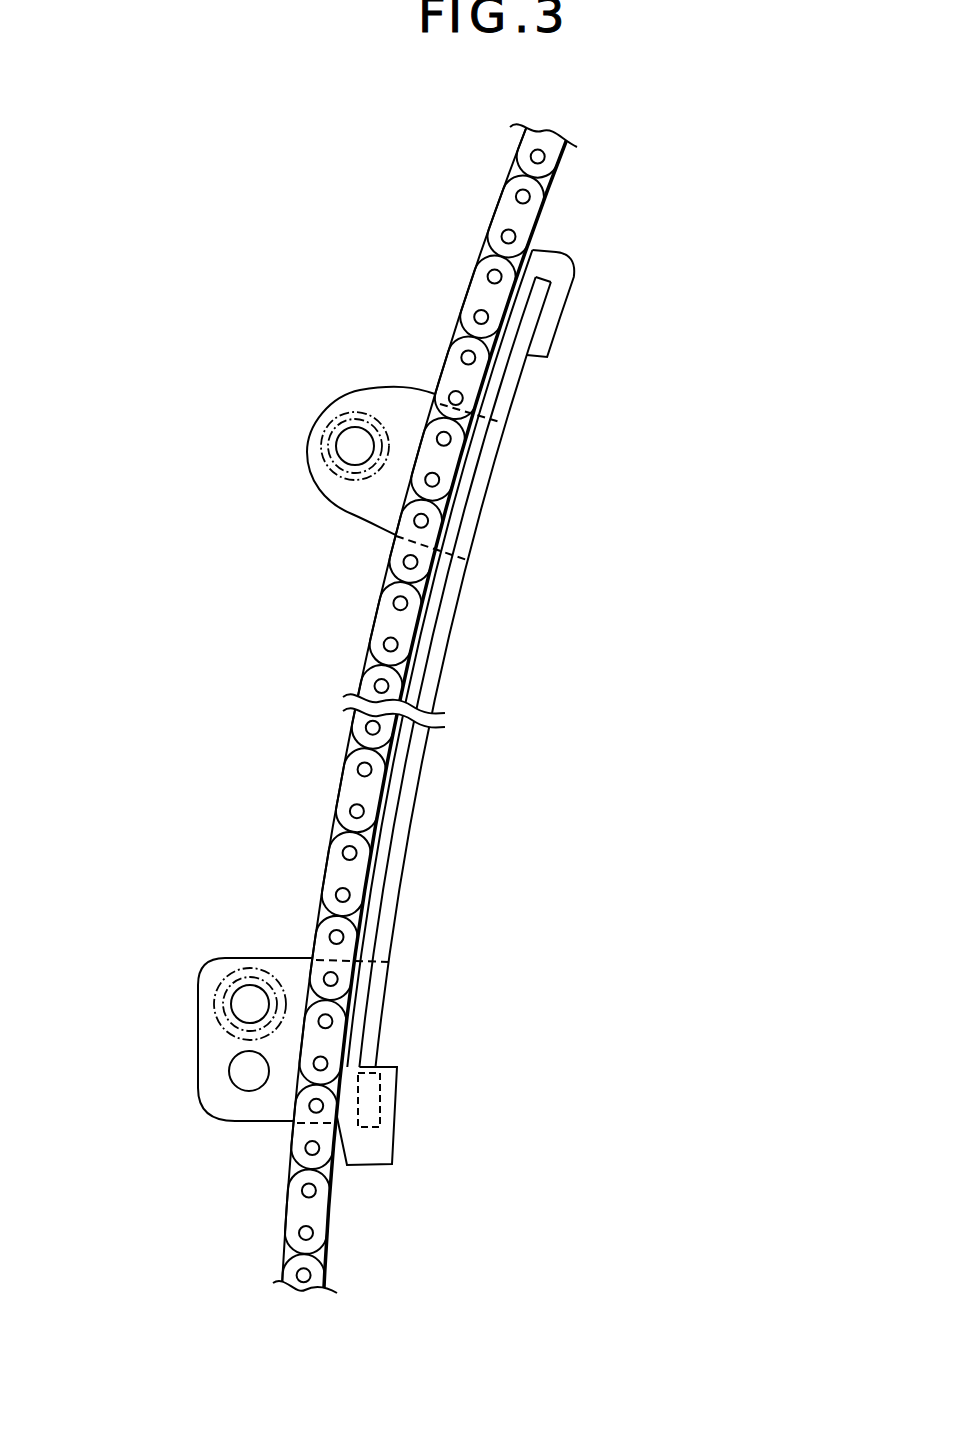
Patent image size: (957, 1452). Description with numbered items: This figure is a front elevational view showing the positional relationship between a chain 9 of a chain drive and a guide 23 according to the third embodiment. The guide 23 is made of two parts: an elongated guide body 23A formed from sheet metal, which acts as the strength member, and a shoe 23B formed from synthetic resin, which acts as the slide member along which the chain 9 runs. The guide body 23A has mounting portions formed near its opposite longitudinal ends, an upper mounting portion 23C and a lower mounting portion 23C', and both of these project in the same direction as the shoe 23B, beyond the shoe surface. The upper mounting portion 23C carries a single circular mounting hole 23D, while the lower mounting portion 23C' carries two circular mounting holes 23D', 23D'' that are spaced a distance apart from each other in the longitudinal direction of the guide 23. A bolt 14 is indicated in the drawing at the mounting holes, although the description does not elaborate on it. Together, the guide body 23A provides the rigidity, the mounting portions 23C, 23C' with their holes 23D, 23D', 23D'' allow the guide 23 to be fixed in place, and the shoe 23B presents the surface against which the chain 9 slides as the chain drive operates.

The chain 9 is at (328, 753).
The bolt 14 is at (333, 435).
The guide 23 is at (467, 707).
The guide body 23A is at (421, 767).
The shoe 23B is at (393, 831).
The upper mounting portion 23C is at (403, 426).
The mounting hole 23D is at (283, 486).
The lower mounting portion 23C' is at (269, 1079).
The mounting hole 23D' is at (173, 1006).
The mounting hole 23D'' is at (173, 1086).